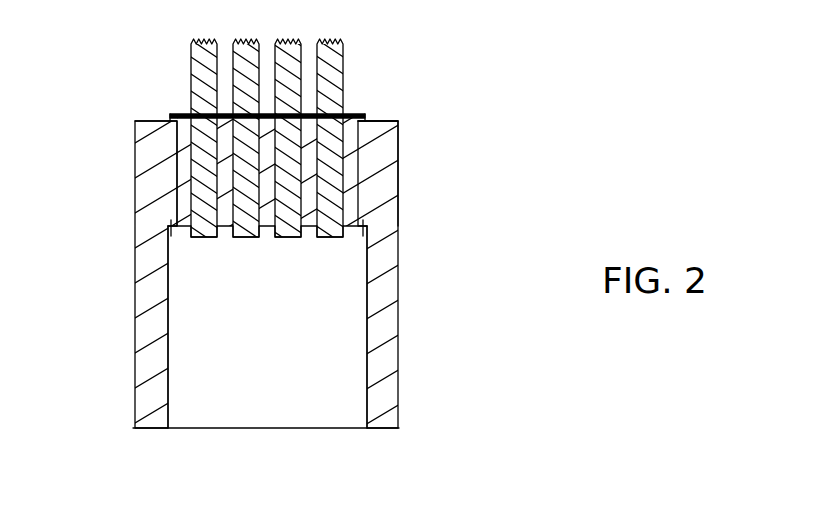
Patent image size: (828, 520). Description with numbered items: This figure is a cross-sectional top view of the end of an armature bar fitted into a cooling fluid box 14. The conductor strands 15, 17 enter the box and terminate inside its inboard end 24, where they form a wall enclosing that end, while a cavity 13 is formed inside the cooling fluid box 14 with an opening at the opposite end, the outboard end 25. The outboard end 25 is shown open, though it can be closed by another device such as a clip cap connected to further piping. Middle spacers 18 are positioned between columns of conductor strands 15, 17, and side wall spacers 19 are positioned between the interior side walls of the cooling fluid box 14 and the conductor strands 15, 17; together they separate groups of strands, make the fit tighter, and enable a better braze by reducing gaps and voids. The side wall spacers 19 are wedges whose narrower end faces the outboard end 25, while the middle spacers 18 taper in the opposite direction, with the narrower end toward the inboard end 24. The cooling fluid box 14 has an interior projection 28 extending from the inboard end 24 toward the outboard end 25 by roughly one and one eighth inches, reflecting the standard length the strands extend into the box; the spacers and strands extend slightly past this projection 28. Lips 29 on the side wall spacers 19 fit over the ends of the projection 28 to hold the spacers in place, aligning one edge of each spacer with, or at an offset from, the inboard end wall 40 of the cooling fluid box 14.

The cavity 13 is at (279, 392).
The cooling fluid box 14 is at (282, 260).
The conductor strands 15 is at (309, 184).
The conductor strands 17 is at (338, 64).
The middle spacers 18 is at (309, 238).
The side wall spacers 19 is at (183, 168).
The inboard end 24 is at (357, 104).
The outboard end 25 is at (298, 428).
The interior projection 28 is at (170, 207).
The lips 29 is at (170, 113).
The inboard end wall 40 is at (392, 122).